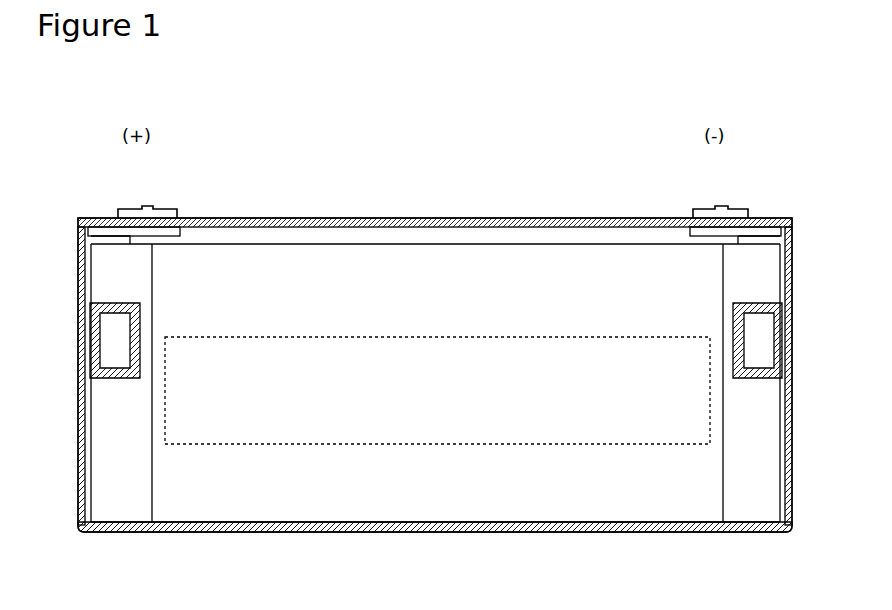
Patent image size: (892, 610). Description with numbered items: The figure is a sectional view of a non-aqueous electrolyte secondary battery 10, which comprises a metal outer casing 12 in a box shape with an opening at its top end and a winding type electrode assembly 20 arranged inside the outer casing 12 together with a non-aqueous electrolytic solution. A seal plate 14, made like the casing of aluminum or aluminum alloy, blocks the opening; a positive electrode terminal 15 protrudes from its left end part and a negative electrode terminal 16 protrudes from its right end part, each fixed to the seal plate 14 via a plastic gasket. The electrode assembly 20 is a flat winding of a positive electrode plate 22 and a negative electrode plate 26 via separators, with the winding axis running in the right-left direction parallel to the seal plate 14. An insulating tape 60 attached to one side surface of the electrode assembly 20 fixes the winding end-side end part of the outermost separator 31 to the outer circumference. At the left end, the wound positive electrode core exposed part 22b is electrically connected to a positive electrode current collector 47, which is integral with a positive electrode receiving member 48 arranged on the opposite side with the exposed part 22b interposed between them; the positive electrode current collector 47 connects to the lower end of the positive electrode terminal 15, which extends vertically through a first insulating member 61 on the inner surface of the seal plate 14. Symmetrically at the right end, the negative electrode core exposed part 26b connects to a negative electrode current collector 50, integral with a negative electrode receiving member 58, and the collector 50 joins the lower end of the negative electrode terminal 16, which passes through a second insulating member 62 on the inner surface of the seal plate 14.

The non-aqueous electrolyte secondary battery 10 is at (541, 118).
The outer casing 12 is at (258, 533).
The seal plate 14 is at (494, 218).
The positive electrode terminal 15 is at (147, 208).
The negative electrode terminal 16 is at (721, 208).
The winding type electrode assembly 20 is at (436, 404).
The positive electrode plate 22 is at (120, 440).
The positive electrode core exposed part 22b is at (110, 488).
The negative electrode plate 26 is at (752, 440).
The negative electrode core exposed part 26b is at (760, 485).
The separator 31 is at (497, 502).
The positive electrode current collector 47 is at (104, 258).
The positive electrode receiving member 48 is at (110, 338).
The negative electrode current collector 50 is at (772, 243).
The negative electrode receiving member 58 is at (783, 340).
The insulating tape 60 is at (584, 420).
The first insulating member 61 is at (110, 225).
The second insulating member 62 is at (767, 226).